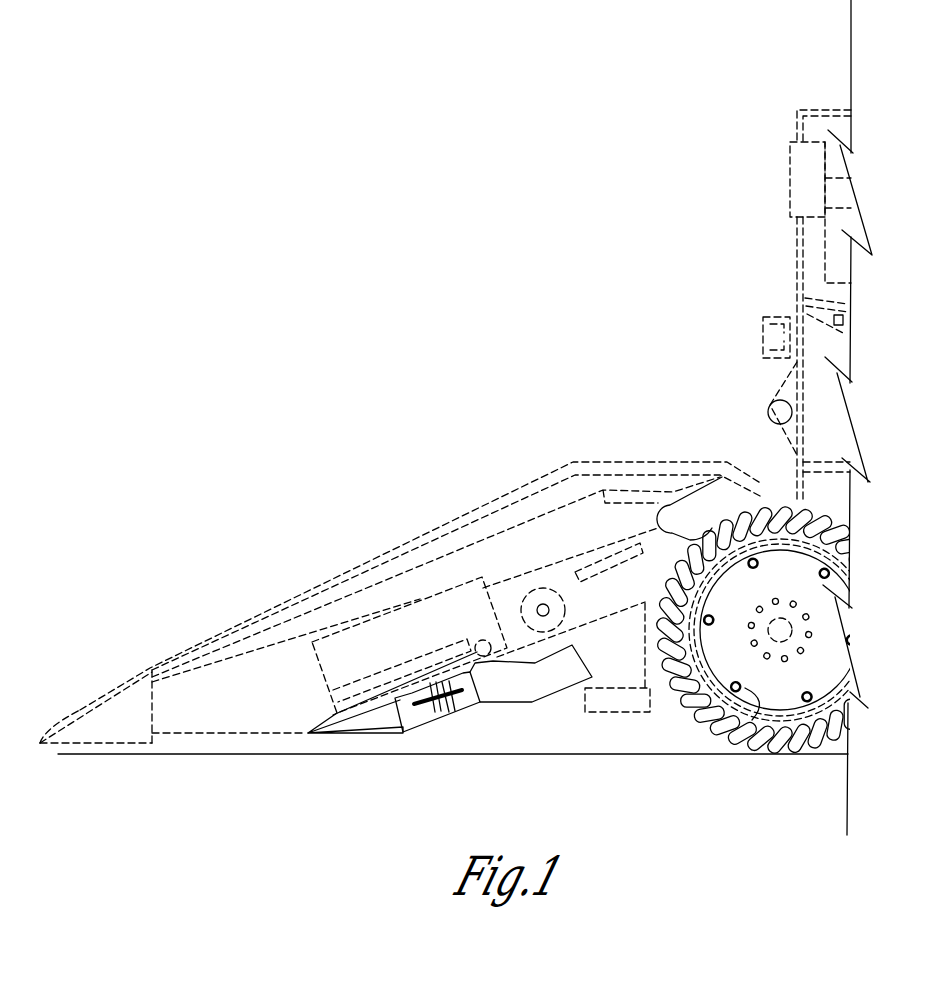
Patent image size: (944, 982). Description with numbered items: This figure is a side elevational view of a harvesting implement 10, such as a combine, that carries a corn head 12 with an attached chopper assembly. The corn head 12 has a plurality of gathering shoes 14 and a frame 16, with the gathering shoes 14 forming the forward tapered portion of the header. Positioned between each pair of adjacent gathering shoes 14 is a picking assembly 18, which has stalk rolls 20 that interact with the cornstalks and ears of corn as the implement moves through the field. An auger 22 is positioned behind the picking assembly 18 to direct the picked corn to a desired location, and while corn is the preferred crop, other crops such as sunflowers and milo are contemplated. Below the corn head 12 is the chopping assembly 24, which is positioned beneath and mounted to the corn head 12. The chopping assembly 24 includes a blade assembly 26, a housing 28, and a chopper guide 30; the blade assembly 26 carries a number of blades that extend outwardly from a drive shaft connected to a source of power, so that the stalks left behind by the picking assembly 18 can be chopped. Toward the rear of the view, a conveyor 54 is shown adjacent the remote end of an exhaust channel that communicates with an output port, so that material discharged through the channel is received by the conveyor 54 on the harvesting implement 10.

The harvesting implement 10 is at (739, 101).
The corn head 12 is at (359, 531).
The gathering shoes 14 is at (97, 689).
The frame 16 is at (632, 578).
The picking assembly 18 is at (337, 635).
The stalk rolls 20 is at (308, 733).
The auger 22 is at (525, 596).
The chopping assembly 24 is at (451, 735).
The blade assembly 26 is at (431, 712).
The housing 28 is at (477, 703).
The chopper guide 30 is at (358, 733).
The conveyor 54 is at (832, 660).